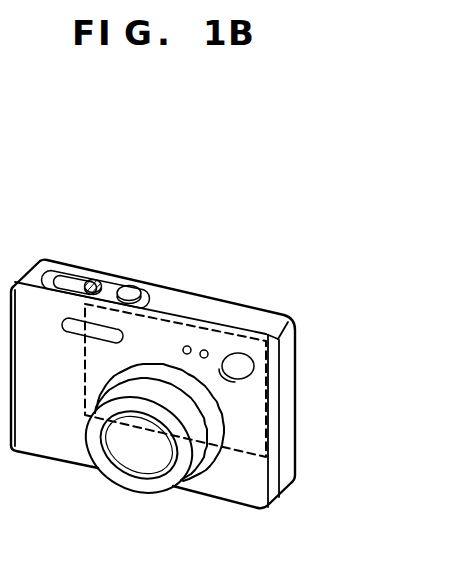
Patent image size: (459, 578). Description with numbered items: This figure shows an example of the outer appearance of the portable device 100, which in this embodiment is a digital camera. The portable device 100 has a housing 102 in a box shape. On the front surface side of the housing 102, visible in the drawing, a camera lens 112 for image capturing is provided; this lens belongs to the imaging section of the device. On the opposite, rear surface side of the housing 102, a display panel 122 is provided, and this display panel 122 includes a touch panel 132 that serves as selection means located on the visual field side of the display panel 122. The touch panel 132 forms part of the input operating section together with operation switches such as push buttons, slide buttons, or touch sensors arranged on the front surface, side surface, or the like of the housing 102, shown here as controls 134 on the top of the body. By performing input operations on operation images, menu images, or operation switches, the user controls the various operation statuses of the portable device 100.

The portable device 100 is at (218, 253).
The housing 102 is at (229, 493).
The camera lens 112 is at (142, 455).
The display panel 122 is at (339, 262).
The touch panel 132 is at (248, 338).
The operation buttons 134 is at (93, 279).